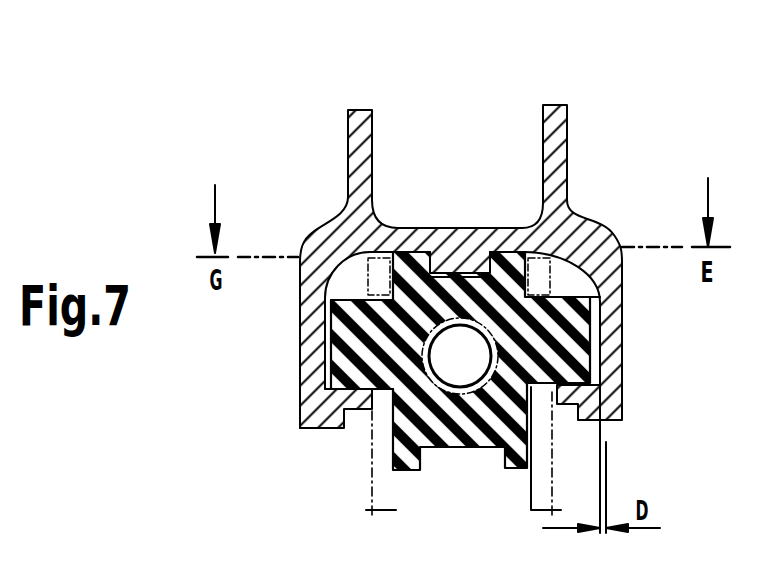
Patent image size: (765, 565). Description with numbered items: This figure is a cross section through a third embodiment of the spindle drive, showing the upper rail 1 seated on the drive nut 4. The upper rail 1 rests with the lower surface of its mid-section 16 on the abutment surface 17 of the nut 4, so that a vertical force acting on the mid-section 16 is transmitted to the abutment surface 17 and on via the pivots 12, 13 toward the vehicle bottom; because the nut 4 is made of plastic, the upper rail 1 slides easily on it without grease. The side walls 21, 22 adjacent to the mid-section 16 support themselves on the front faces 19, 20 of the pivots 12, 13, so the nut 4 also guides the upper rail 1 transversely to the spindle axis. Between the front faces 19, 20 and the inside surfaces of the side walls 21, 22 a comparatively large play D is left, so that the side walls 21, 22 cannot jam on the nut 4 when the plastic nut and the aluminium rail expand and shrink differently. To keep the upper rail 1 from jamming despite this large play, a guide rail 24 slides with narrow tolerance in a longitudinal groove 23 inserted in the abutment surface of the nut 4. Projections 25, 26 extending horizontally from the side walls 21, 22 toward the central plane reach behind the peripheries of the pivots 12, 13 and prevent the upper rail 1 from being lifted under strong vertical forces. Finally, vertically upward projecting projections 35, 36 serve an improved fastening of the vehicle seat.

The upper rail 1 is at (558, 112).
The drive nut 4 is at (468, 448).
The pivot 12 is at (332, 373).
The pivot 13 is at (545, 303).
The mid-section 16 is at (458, 250).
The abutment surface 17 is at (586, 221).
The front face 19 is at (590, 372).
The front face 20 is at (326, 323).
The side wall 21 is at (620, 342).
The side wall 22 is at (320, 345).
The longitudinal groove 23 is at (476, 248).
The guide rail 24 is at (440, 252).
The projection 25 is at (372, 401).
The projection 26 is at (560, 392).
The projection 35 is at (357, 157).
The projection 36 is at (573, 156).